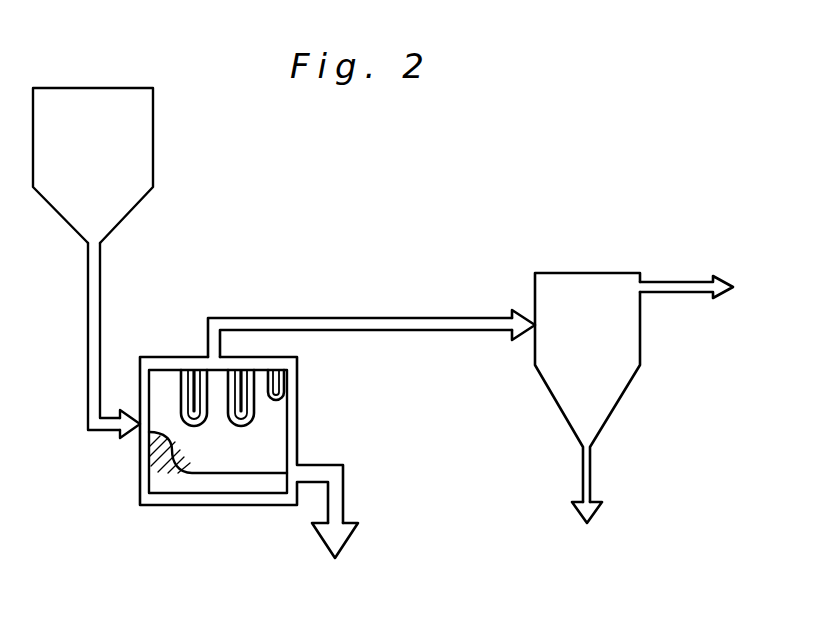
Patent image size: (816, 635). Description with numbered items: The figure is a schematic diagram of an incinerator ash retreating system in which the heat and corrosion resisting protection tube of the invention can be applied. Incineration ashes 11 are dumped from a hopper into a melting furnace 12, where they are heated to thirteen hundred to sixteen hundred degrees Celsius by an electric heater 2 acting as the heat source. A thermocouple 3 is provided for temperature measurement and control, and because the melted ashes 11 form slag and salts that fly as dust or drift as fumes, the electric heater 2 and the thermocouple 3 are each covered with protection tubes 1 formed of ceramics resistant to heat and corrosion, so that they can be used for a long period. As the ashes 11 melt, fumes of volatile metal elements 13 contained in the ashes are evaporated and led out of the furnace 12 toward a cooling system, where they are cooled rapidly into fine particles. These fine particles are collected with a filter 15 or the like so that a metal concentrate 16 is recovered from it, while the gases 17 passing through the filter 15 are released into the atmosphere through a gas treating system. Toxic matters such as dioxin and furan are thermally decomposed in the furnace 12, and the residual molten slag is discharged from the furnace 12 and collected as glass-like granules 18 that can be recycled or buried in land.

The protection tube 1 is at (210, 430).
The electric heater 2 is at (238, 389).
The thermocouple 3 is at (273, 379).
The incineration ashes 11 is at (92, 75).
The melting furnace 12 is at (196, 505).
The fumes of volatile metal elements 13 is at (410, 318).
The filter 15 is at (587, 285).
The metal concentrate 16 is at (590, 533).
The gases 17 is at (711, 288).
The glass-like granules 18 is at (335, 563).